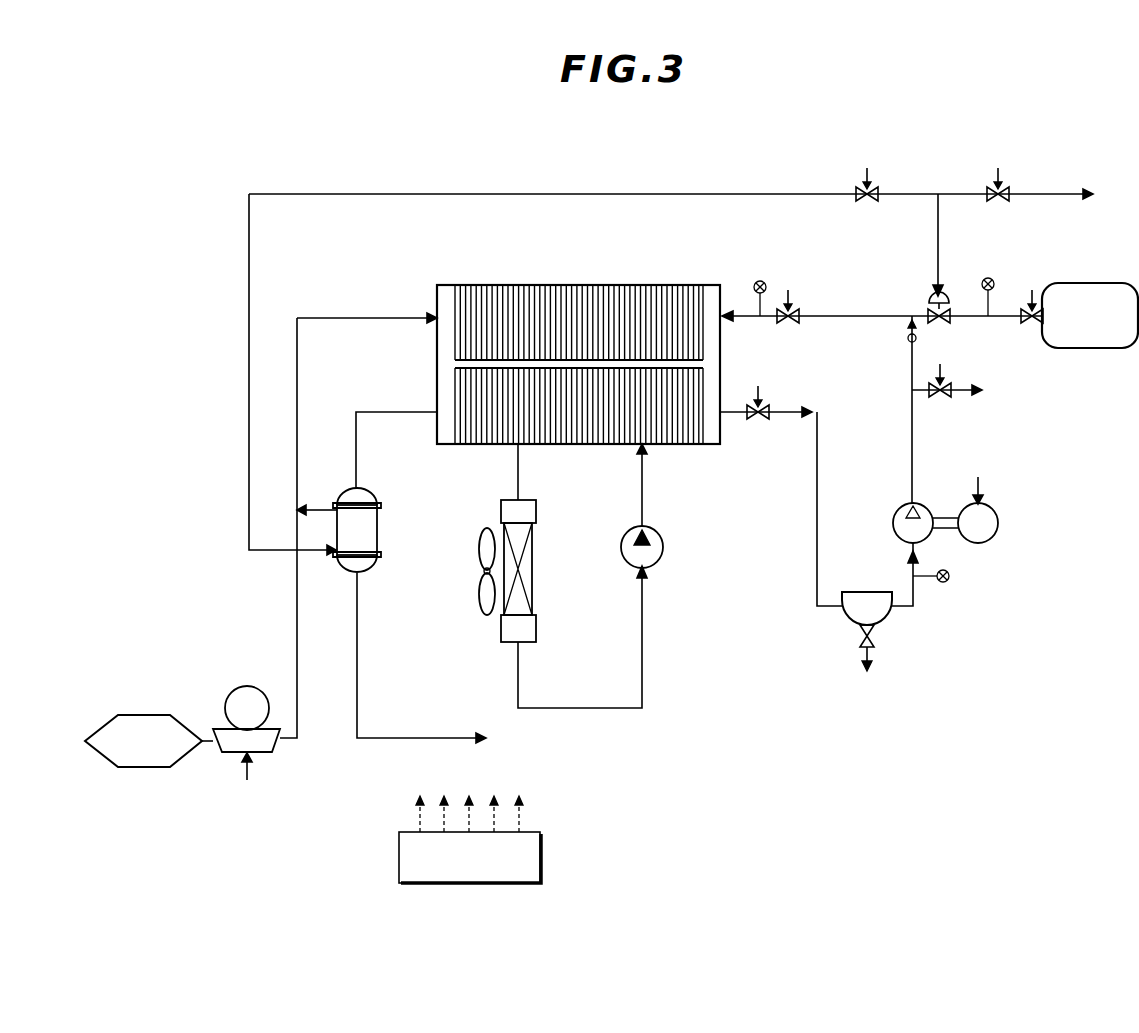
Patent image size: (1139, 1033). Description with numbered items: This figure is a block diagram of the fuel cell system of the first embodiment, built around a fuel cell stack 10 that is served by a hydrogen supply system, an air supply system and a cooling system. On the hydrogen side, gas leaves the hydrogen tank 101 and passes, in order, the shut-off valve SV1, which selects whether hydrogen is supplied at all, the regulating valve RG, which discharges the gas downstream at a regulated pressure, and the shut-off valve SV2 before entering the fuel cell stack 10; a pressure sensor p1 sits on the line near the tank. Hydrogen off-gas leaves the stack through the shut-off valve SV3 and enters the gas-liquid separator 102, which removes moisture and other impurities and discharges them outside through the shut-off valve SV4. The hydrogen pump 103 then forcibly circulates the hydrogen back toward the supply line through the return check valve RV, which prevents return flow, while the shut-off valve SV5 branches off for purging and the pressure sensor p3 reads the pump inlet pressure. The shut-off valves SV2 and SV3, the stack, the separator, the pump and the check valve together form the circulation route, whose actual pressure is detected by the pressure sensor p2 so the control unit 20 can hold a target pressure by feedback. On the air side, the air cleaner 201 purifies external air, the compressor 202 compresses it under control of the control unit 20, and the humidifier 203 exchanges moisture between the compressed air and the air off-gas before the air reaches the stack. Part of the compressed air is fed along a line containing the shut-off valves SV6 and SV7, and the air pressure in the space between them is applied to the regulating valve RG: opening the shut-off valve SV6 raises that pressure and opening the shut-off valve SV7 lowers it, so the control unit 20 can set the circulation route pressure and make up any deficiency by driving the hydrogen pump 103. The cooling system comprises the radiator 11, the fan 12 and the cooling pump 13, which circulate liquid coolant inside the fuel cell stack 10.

The fuel cell stack 10 is at (588, 283).
The radiator 11 is at (538, 515).
The fan 12 is at (478, 572).
The cooling pump 13 is at (664, 548).
The control unit 20 is at (545, 848).
The hydrogen tank 101 is at (1080, 283).
The gas-liquid separator 102 is at (870, 590).
The hydrogen pump 103 is at (1000, 512).
The air cleaner 201 is at (148, 715).
The compressor 202 is at (247, 686).
The humidifier 203 is at (380, 493).
The shut-off valve SV1 is at (1028, 326).
The shut-off valve SV2 is at (795, 308).
The shut-off valve SV3 is at (763, 402).
The shut-off valve SV4 is at (877, 632).
The shut-off valve SV5 is at (943, 400).
The shut-off valve SV6 is at (873, 186).
The shut-off valve SV7 is at (1003, 186).
The regulating valve RG is at (948, 305).
The return check valve RV is at (918, 338).
The pressure sensor p1 is at (990, 278).
The pressure sensor p2 is at (762, 281).
The pressure sensor p3 is at (950, 576).